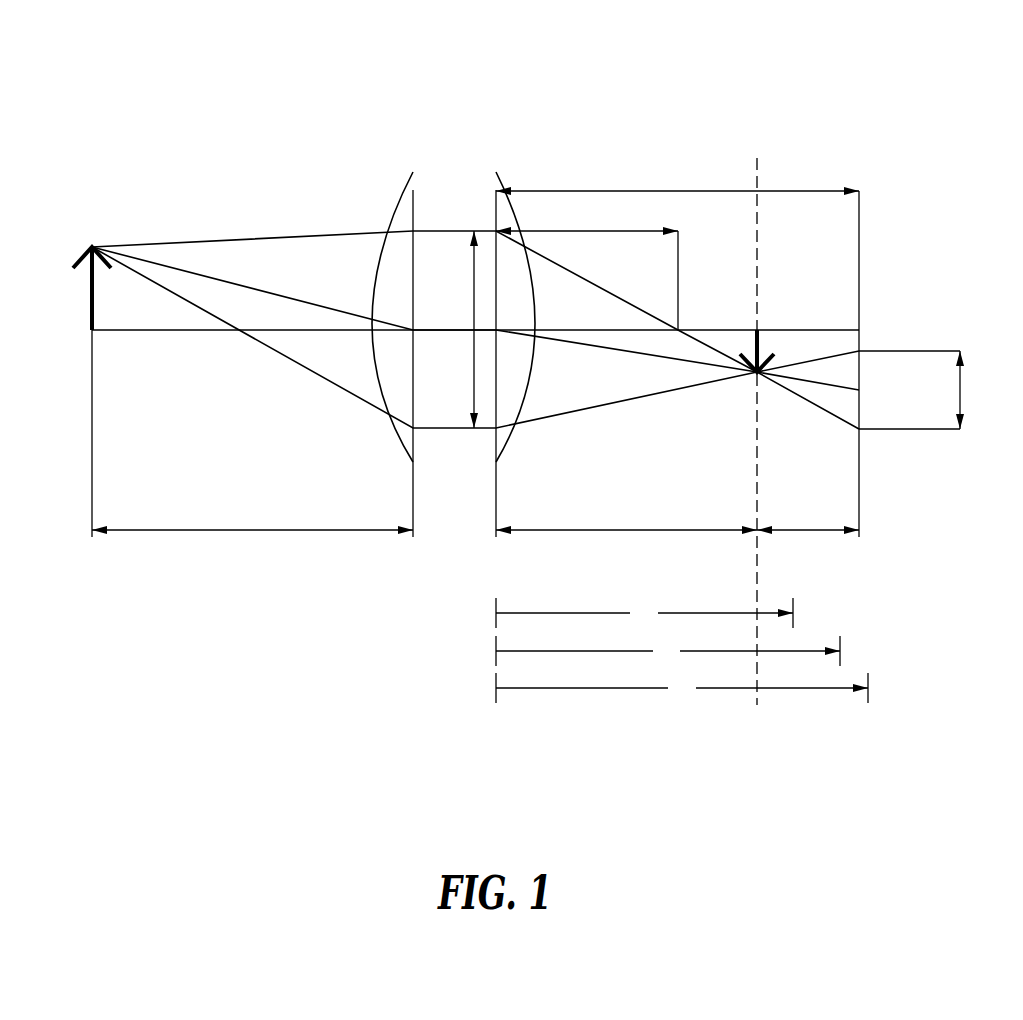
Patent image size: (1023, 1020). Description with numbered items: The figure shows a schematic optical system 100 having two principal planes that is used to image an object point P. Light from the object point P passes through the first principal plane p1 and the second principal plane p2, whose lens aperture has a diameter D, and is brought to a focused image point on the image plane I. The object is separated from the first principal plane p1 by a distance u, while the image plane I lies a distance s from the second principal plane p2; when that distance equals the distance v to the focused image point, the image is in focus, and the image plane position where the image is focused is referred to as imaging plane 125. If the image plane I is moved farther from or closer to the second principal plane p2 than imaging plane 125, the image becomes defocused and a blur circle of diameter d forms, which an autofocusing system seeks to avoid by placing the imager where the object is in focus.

The optical system 100 is at (126, 69).
The imaging plane 125 is at (764, 181).
The object point P is at (92, 259).
The first principal plane p1 is at (399, 338).
The second principal plane p2 is at (511, 338).
The diameter of the lens aperture D is at (455, 329).
The focal point F is at (696, 280).
The image plane I is at (853, 333).